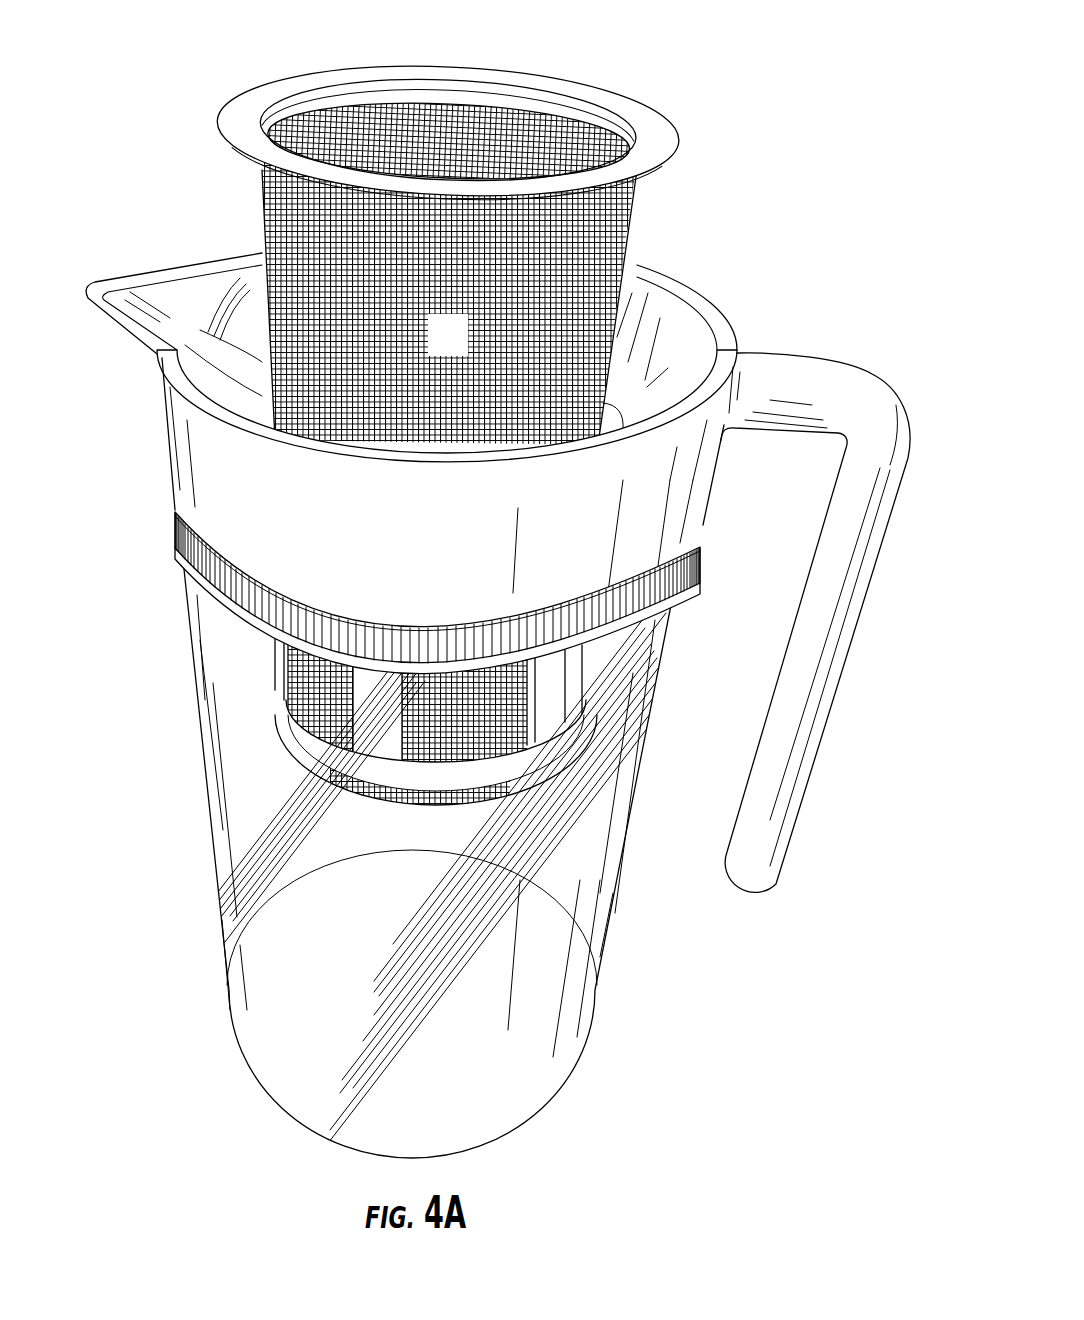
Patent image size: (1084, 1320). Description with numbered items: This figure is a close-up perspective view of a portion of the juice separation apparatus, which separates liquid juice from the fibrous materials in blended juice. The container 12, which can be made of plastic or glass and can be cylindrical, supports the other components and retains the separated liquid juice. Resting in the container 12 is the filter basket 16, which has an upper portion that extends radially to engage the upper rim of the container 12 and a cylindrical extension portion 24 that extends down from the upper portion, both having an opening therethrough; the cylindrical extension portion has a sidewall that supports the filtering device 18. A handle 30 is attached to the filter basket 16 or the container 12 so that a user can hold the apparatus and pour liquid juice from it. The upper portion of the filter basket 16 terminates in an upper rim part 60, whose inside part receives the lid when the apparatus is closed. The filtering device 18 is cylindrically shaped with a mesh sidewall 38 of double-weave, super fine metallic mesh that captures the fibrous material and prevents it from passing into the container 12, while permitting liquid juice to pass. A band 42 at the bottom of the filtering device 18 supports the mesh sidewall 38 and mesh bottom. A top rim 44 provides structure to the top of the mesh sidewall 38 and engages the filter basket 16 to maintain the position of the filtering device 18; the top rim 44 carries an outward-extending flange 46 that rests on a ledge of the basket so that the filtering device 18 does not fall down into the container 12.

The container 12 is at (613, 903).
The filter basket 16 is at (180, 452).
The filtering device 18 is at (501, 224).
The cylindrical extension portion 24 is at (488, 749).
The handle 30 is at (858, 548).
The mesh sidewall 38 is at (434, 350).
The band 42 is at (427, 818).
The top rim 44 is at (534, 98).
The flange 46 is at (655, 128).
The upper rim part 60 is at (713, 320).